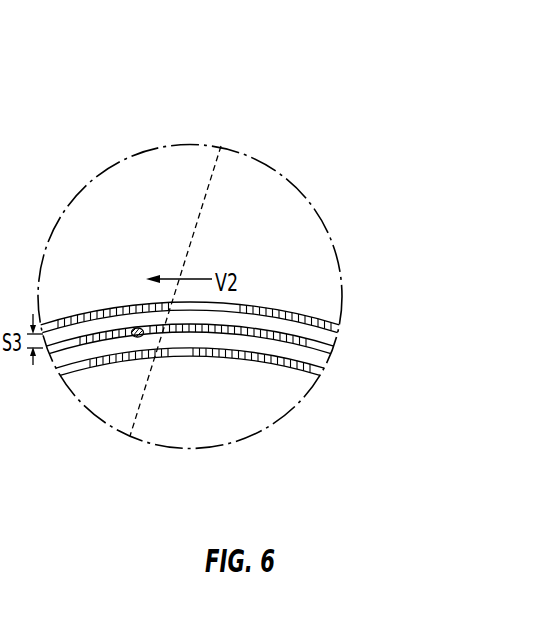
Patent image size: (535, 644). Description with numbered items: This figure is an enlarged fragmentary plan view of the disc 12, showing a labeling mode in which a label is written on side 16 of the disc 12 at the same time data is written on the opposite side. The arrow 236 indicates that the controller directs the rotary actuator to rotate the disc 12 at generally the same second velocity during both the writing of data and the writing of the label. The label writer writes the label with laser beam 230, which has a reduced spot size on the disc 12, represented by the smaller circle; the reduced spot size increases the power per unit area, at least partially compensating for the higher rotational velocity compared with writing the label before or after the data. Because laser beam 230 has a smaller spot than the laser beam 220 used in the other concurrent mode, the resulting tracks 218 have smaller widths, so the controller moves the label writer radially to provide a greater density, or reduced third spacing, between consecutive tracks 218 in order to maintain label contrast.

The disc 12 is at (263, 165).
The side 16 is at (293, 215).
The tracks 218 is at (343, 324).
The laser beam 220 is at (178, 352).
The laser beam 230 is at (131, 338).
The arrow 236 is at (191, 278).